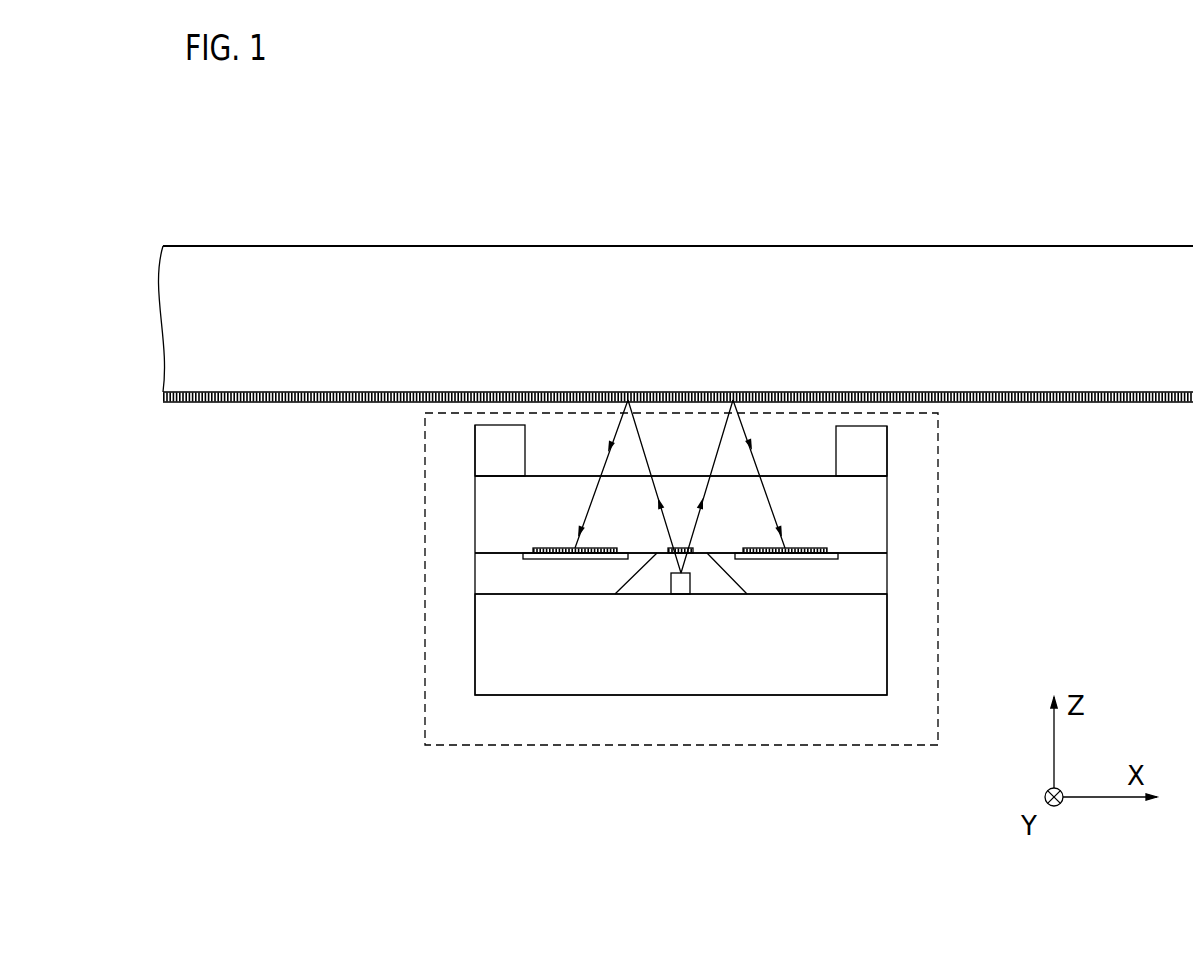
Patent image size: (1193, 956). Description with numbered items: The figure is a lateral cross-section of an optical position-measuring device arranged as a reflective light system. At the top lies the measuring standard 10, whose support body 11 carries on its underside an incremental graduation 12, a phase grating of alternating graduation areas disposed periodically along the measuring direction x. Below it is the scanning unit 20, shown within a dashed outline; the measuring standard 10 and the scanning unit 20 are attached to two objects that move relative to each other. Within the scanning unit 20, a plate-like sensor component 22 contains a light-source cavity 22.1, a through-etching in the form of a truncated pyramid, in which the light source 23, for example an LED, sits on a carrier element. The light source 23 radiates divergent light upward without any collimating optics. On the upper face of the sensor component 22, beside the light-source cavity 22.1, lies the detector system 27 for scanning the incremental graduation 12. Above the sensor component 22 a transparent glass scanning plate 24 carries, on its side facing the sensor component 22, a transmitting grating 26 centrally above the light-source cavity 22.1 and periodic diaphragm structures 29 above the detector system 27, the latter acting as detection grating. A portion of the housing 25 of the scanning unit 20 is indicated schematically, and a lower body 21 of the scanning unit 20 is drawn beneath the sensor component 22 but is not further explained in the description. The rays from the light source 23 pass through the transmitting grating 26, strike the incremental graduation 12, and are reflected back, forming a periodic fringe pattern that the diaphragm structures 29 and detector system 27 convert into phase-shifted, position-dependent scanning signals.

The measuring standard 10 is at (675, 327).
The support body 11 is at (1118, 262).
The incremental graduation 12 is at (1131, 402).
The scanning unit 20 is at (412, 743).
The housing base 21 is at (565, 672).
The sensor component 22 is at (523, 557).
The light-source cavity 22.1 is at (642, 587).
The light source 23 is at (682, 583).
The scanning plate 24 is at (503, 539).
The housing 25 is at (500, 455).
The transmitting grating 26 is at (678, 547).
The detector system 27 is at (503, 584).
The periodic diaphragm structures 29 is at (798, 547).